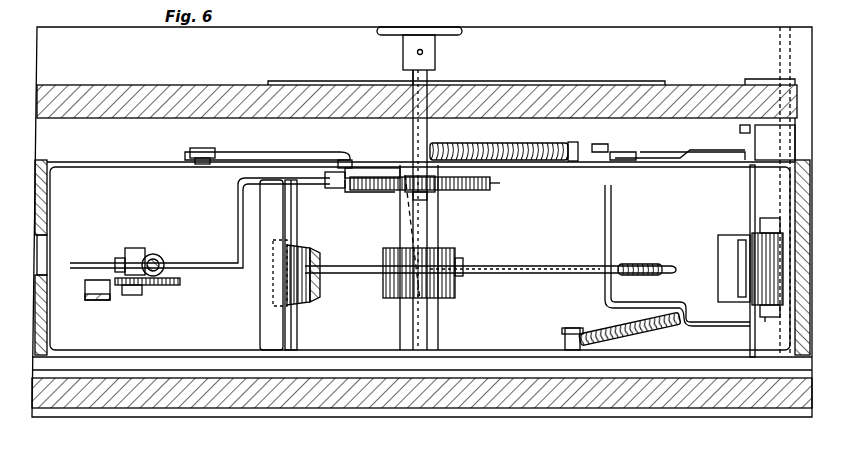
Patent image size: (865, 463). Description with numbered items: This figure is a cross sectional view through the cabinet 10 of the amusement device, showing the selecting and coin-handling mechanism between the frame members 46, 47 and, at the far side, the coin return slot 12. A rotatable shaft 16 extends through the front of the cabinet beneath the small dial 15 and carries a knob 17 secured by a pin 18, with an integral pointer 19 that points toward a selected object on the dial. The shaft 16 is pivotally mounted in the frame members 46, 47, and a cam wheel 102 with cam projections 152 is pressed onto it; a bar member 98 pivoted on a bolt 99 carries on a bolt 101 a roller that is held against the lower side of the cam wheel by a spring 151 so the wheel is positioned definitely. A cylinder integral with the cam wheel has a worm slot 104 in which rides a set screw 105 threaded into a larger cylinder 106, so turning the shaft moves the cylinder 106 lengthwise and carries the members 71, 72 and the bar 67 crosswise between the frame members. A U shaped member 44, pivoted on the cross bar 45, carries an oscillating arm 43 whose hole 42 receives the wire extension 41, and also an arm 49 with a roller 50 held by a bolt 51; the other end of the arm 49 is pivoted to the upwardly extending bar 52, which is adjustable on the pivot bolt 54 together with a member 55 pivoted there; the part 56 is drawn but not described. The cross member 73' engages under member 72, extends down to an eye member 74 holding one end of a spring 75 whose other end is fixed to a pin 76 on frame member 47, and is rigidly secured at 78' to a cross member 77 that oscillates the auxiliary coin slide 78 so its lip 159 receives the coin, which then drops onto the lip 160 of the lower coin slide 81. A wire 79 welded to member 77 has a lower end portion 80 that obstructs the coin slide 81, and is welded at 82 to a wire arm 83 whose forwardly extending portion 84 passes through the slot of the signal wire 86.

The cabinet 10 is at (65, 95).
The coin return slot 12 is at (786, 55).
The small dial 15 is at (525, 80).
The rotatable shaft 16 is at (430, 80).
The knob 17 is at (430, 30).
The pin 18 is at (416, 52).
The pointer 19 is at (430, 72).
The wire extension 41 is at (365, 192).
The hole 42 is at (345, 160).
The oscillating arm 43 is at (332, 188).
The U shaped member 44 is at (262, 332).
The cross bar 45 is at (298, 328).
The frame member 46 is at (118, 162).
The frame member 47 is at (155, 350).
The arm 49 is at (205, 263).
The roller 50 is at (436, 190).
The bolt 51 is at (430, 205).
The upwardly extending bar 52 is at (96, 302).
The pivot bolt 54 is at (135, 295).
The member 55 is at (140, 250).
The pin 56 is at (162, 258).
The bar 67 is at (318, 292).
The member 71 is at (508, 266).
The member 72 is at (508, 275).
The cross member 73' is at (642, 246).
The eye member 74 is at (715, 322).
The spring 75 is at (600, 332).
The pin 76 is at (565, 338).
The cross member 77 is at (750, 334).
The auxiliary coin slide 78 is at (736, 267).
The point of rigid securement 78' is at (715, 295).
The wire 79 is at (745, 140).
The lower end portion 80 is at (805, 139).
The coin slide 81 is at (785, 144).
The weld 82 is at (740, 156).
The wire arm 83 is at (680, 142).
The forwardly extending portion 84 is at (636, 148).
The signal wire 86 is at (600, 148).
The bar member 98 is at (252, 152).
The bolt 99 is at (196, 145).
The bolt 101 is at (412, 152).
The cam wheel 102 is at (470, 190).
The worm slot 104 is at (408, 220).
The set screw 105 is at (462, 262).
The larger cylinder 106 is at (383, 252).
The spring 151 is at (498, 150).
The cam projections 152 is at (500, 183).
The lip 159 is at (720, 247).
The lip 160 is at (768, 318).